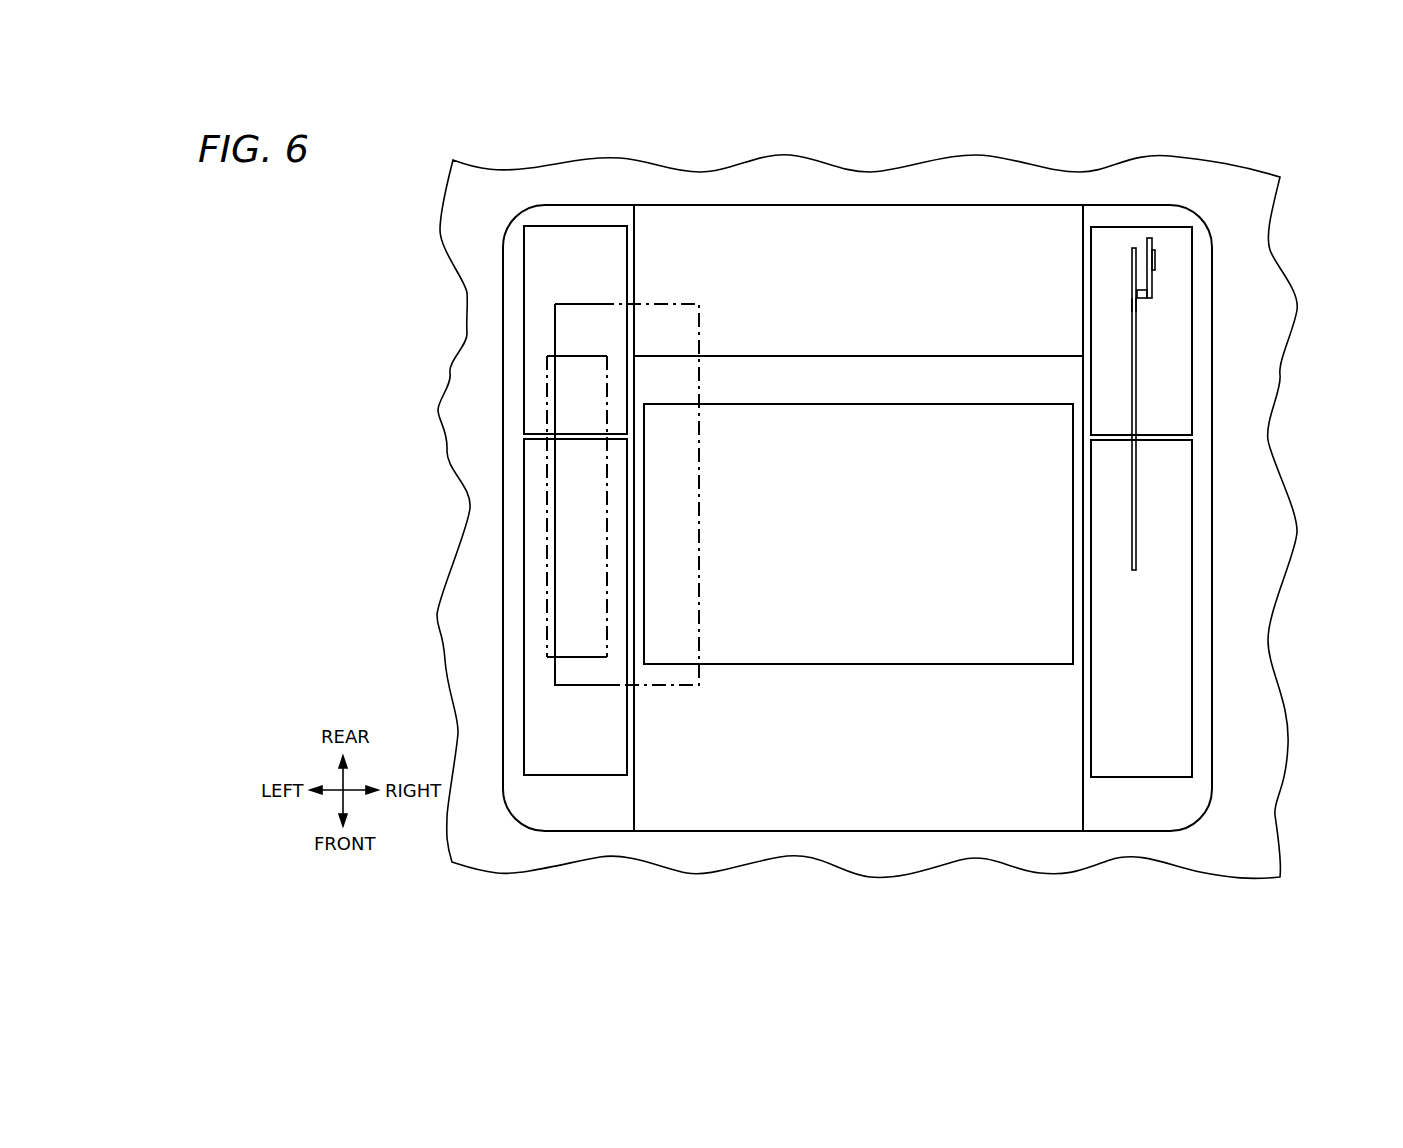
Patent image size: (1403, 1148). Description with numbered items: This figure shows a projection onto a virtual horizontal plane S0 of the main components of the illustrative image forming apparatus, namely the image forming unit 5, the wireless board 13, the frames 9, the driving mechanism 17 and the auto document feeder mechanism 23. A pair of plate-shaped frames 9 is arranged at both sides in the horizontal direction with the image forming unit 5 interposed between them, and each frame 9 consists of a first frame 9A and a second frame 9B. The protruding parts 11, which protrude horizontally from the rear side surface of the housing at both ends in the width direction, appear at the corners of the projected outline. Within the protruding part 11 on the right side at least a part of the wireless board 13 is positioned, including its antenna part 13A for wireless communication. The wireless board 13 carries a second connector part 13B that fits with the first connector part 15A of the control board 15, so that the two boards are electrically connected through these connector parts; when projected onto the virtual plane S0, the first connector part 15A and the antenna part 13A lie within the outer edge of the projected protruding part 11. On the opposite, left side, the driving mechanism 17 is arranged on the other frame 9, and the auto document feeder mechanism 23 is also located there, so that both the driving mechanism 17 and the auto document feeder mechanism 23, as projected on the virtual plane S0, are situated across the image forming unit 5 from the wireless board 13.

The image forming unit 5 is at (962, 639).
The frame 9 is at (858, 501).
The first frame 9A is at (523, 606).
The second frame 9B is at (530, 390).
The protruding part 11 is at (503, 260).
The wireless board 13 is at (1152, 286).
The antenna part 13A is at (1157, 257).
The second connector part 13B is at (1140, 298).
The control board 15 is at (1133, 369).
The first connector part 15A is at (1141, 305).
The driving mechanism 17 is at (545, 507).
The auto document feeder mechanism 23 is at (555, 318).
The virtual plane S0 is at (1250, 810).